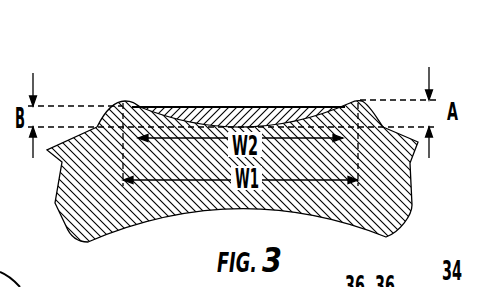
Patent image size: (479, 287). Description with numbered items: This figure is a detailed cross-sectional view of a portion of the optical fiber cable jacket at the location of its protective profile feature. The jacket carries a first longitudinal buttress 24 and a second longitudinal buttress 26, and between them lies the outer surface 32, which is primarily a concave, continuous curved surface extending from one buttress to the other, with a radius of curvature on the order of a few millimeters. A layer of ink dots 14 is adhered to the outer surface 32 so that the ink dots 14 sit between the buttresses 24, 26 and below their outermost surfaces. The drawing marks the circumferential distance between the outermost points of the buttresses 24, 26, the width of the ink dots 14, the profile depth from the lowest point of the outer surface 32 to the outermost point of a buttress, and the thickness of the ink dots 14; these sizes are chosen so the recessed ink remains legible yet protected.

The ink dots 14 is at (238, 107).
The first longitudinal buttress 24 is at (120, 102).
The second longitudinal buttress 26 is at (364, 103).
The outer surface 32 is at (217, 127).